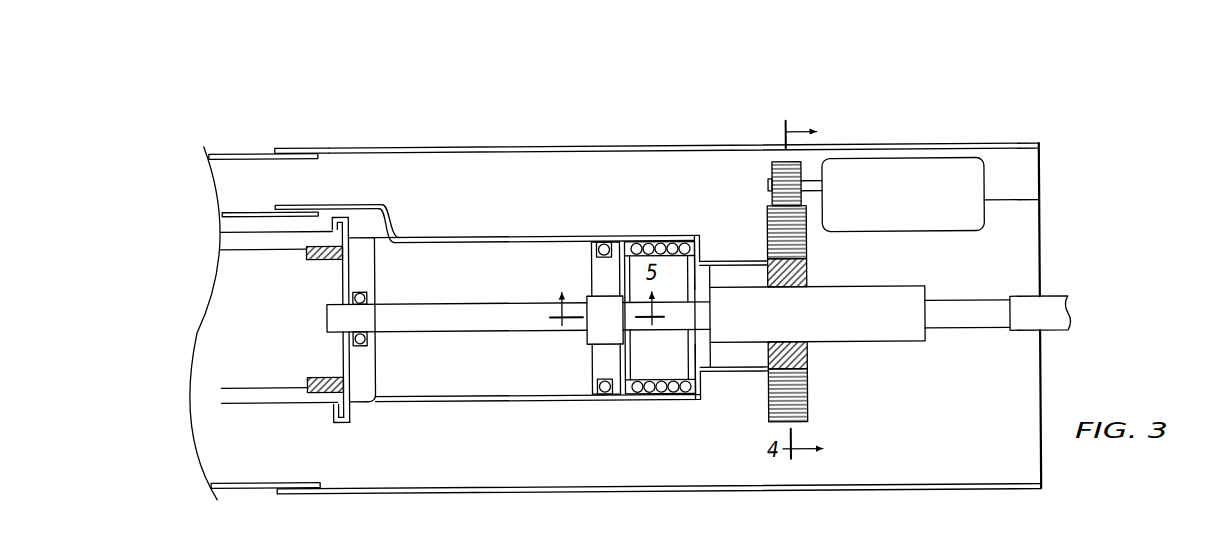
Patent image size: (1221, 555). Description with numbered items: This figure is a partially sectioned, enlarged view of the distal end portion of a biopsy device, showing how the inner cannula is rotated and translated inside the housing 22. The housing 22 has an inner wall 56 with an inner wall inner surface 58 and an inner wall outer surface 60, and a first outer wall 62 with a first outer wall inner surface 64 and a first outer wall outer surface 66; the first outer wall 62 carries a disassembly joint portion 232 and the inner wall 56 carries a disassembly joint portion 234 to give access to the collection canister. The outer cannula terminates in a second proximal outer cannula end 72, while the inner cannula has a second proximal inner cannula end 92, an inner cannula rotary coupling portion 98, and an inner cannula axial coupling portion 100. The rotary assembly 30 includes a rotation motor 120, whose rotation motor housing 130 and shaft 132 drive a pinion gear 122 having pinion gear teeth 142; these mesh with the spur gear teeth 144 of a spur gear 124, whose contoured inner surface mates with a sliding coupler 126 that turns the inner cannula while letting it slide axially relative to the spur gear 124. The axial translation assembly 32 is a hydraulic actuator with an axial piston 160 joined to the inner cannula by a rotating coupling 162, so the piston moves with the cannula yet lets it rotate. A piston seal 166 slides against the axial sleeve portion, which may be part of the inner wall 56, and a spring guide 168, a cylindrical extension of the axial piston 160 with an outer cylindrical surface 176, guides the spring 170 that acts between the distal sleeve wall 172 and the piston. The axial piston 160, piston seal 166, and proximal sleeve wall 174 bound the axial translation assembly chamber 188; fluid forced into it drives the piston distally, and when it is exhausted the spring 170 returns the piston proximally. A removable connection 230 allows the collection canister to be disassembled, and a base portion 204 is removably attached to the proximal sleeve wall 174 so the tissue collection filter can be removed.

The housing 22 is at (1010, 196).
The rotary assembly 30 is at (895, 70).
The axial translation assembly 32 is at (580, 412).
The inner wall 56 is at (469, 236).
The inner wall inner surface 58 is at (434, 390).
The inner wall outer surface 60 is at (443, 232).
The first outer wall 62 is at (437, 148).
The first outer wall inner surface 64 is at (356, 162).
The first outer wall outer surface 66 is at (380, 140).
The second proximal outer cannula end 72 is at (1013, 298).
The second proximal inner cannula end 92 is at (337, 303).
The inner cannula rotary coupling portion 98 is at (888, 296).
The inner cannula axial coupling portion 100 is at (600, 312).
The rotation motor 120 is at (881, 183).
The pinion gear 122 is at (773, 162).
The spur gear 124 is at (770, 222).
The sliding coupler 126 is at (888, 340).
The rotation motor housing 130 is at (947, 160).
The shaft 132 is at (824, 158).
The pinion gear teeth 142 is at (772, 192).
The spur gear teeth 144 is at (796, 410).
The axial piston 160 is at (605, 362).
The rotating coupling 162 is at (618, 327).
The piston seal 166 is at (603, 240).
The spring guide 168 is at (634, 370).
The spring 170 is at (692, 237).
The distal sleeve wall 172 is at (727, 372).
The proximal sleeve wall 174 is at (363, 270).
The outer cylindrical surface 176 is at (637, 246).
The axial translation assembly chamber 188 is at (428, 281).
The base portion 204 is at (309, 362).
The removable connection 230 is at (360, 425).
The disassembly joint portion 232 is at (278, 136).
The disassembly joint portion 234 is at (278, 192).